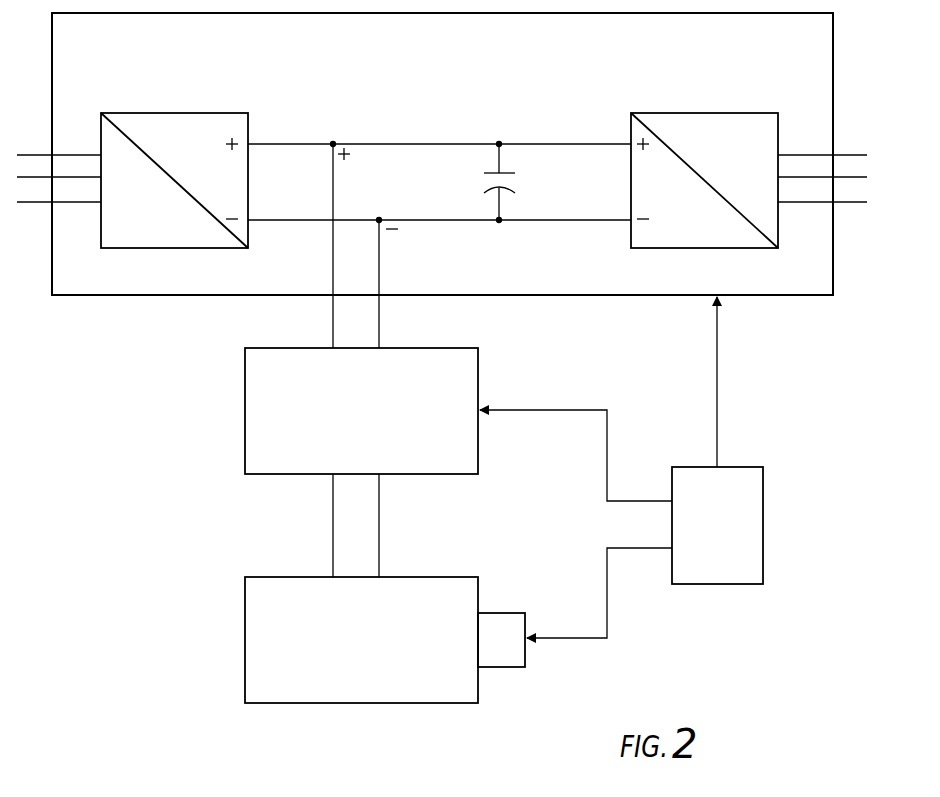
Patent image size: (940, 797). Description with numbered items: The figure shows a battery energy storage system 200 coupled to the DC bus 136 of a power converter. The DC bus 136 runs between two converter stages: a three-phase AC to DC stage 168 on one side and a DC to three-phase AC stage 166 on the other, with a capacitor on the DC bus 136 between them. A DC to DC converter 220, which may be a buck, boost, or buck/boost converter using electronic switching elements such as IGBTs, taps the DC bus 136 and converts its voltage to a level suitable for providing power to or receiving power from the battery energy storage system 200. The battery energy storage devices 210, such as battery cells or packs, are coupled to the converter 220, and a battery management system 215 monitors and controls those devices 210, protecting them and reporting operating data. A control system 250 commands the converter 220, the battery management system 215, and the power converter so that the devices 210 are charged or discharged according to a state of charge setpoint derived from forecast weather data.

The battery energy storage system 200 is at (176, 418).
The AC to DC converter (3AC/DC) 168 is at (181, 112).
The DC bus 136 is at (520, 143).
The DC to AC inverter (DC/3AC) 166 is at (718, 112).
The converter 220 is at (482, 380).
The battery energy storage device 210 is at (365, 705).
The battery management system 215 is at (527, 622).
The control system 250 is at (765, 505).